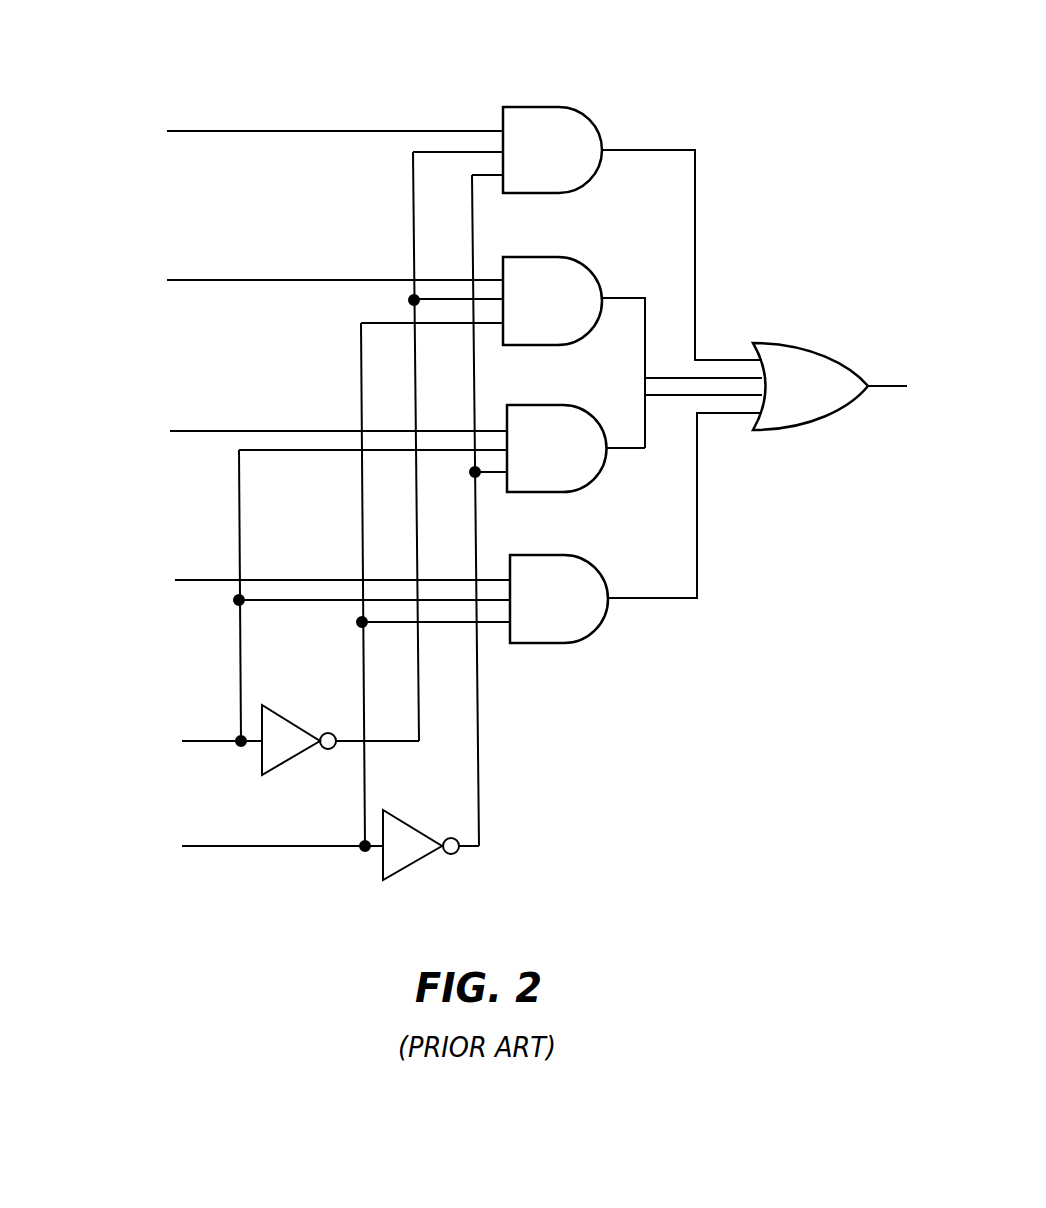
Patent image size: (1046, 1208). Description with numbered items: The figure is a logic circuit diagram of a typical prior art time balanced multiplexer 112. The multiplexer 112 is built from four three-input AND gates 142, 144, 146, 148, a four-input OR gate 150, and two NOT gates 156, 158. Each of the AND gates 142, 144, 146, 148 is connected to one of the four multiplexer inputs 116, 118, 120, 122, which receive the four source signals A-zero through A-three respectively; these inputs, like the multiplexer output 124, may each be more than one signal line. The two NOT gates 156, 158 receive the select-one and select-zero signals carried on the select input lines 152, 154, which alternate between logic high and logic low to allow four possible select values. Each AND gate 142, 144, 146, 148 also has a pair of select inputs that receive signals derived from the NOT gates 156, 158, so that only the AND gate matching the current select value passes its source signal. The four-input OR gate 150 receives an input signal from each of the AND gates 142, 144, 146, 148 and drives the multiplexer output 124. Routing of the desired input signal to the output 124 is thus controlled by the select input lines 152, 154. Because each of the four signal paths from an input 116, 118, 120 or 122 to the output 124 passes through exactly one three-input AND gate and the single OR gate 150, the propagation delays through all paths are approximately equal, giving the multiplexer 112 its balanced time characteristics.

The time balanced multiplexer 112 is at (328, 36).
The multiplexer input 116 is at (216, 131).
The multiplexer input 118 is at (226, 280).
The multiplexer input 120 is at (201, 431).
The multiplexer input 122 is at (208, 580).
The multiplexer output 124 is at (884, 388).
The three-input AND gate 142 is at (590, 120).
The three-input AND gate 144 is at (530, 257).
The three-input AND gate 146 is at (548, 405).
The three-input AND gate 148 is at (560, 555).
The four-input OR gate 150 is at (826, 345).
The select input line 152 is at (220, 745).
The select input line 154 is at (270, 850).
The NOT gate 156 is at (292, 720).
The NOT gate 158 is at (410, 822).